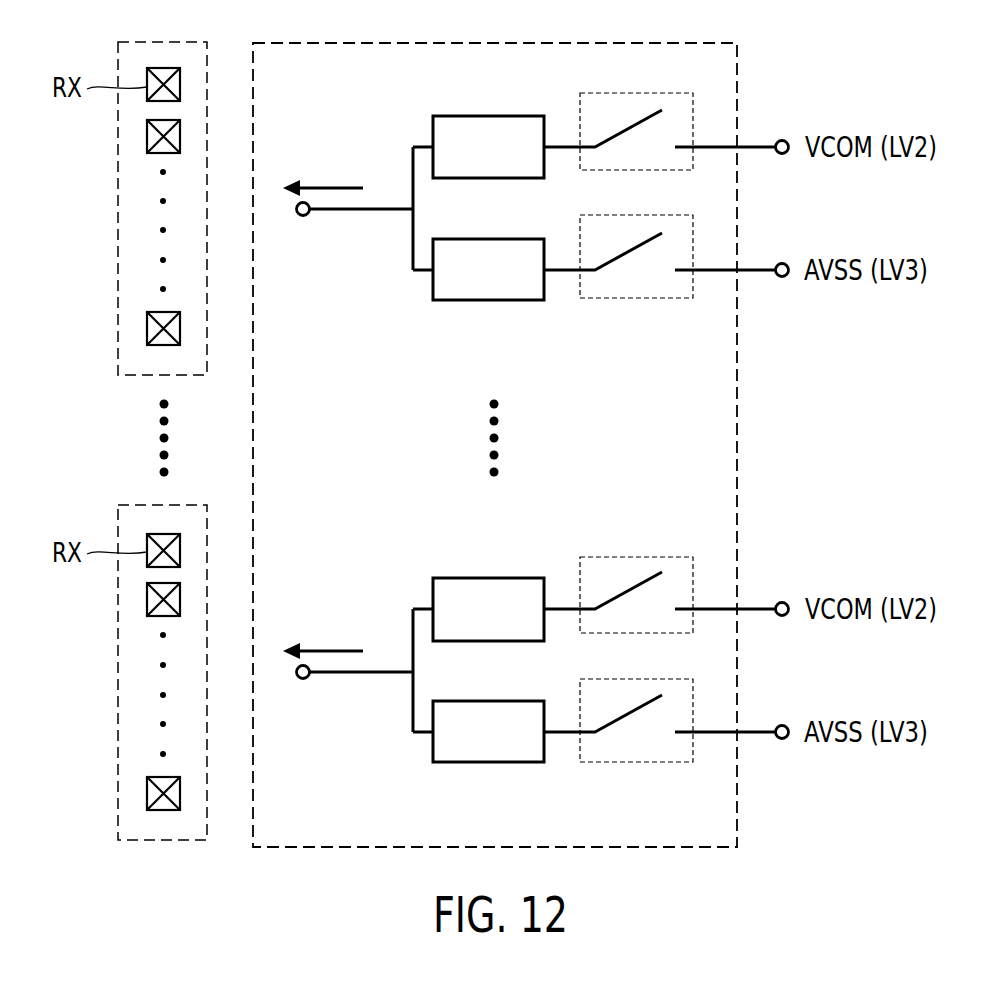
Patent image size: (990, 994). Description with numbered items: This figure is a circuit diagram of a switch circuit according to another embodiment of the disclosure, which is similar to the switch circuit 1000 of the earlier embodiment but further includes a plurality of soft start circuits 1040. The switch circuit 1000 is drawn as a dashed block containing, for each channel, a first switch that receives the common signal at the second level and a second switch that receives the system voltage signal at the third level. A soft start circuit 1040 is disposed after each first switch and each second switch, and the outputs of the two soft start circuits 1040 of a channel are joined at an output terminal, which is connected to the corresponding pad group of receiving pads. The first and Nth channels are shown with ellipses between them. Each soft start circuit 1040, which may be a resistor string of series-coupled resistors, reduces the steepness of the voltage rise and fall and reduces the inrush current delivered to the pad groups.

The switch circuit 1000 is at (737, 80).
The soft start circuit 1040 is at (497, 116).